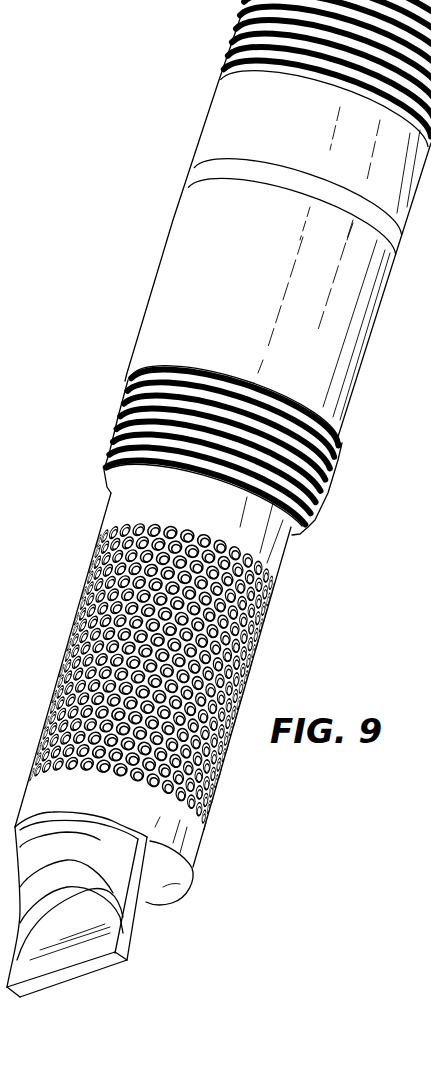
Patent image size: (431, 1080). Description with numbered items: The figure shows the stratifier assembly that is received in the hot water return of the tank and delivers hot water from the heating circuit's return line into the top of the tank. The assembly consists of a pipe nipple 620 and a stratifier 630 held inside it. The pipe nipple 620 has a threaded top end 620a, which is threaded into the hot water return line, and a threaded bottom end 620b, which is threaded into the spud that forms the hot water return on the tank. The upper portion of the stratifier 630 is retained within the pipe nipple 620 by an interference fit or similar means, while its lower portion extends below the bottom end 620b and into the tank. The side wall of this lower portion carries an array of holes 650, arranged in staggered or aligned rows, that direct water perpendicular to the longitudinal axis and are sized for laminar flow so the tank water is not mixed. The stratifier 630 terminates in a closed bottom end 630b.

The pipe nipple 620 is at (182, 280).
The top end of the pipe nipple 620a is at (233, 49).
The bottom end of the pipe nipple 620b is at (128, 418).
The stratifier 630 is at (250, 528).
The holes 650 is at (267, 633).
The bottom end of the stratifier 630b is at (193, 867).